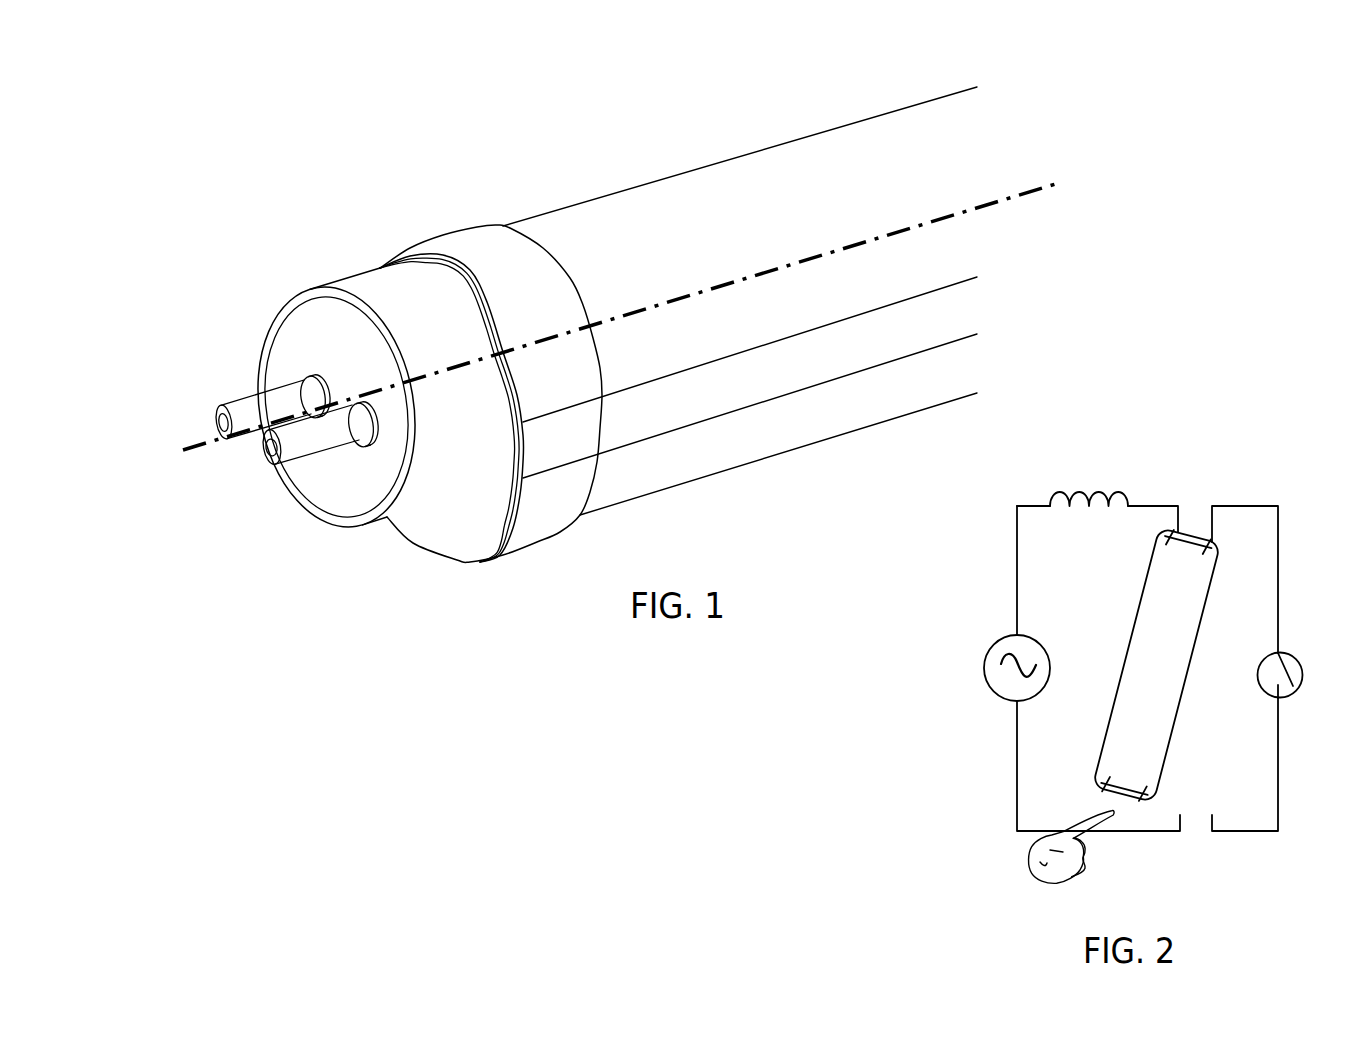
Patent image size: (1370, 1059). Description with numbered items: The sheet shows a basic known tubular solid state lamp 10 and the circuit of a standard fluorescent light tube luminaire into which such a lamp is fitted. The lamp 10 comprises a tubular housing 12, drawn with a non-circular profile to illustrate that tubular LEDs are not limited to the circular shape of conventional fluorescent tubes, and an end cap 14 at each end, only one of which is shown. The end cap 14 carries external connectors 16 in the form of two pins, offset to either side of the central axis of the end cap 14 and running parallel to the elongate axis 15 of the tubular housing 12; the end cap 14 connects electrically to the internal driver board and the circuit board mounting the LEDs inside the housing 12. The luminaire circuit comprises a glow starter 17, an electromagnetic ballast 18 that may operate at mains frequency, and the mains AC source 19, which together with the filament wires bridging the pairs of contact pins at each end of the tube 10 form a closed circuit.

In FIG. 1, the tubular solid state lamp 10 is at (447, 159).
In FIG. 2, the tubular solid state lamp 10 is at (1188, 688).
In FIG. 1, the tubular housing 12 is at (813, 145).
In FIG. 1, the end cap 14 is at (342, 277).
In FIG. 1, the elongate axis 15 is at (719, 287).
In FIG. 1, the external connectors 16 is at (243, 407).
In FIG. 2, the glow starter 17 is at (1282, 654).
In FIG. 2, the ballast 18 is at (1084, 492).
In FIG. 2, the mains AC source 19 is at (1038, 640).